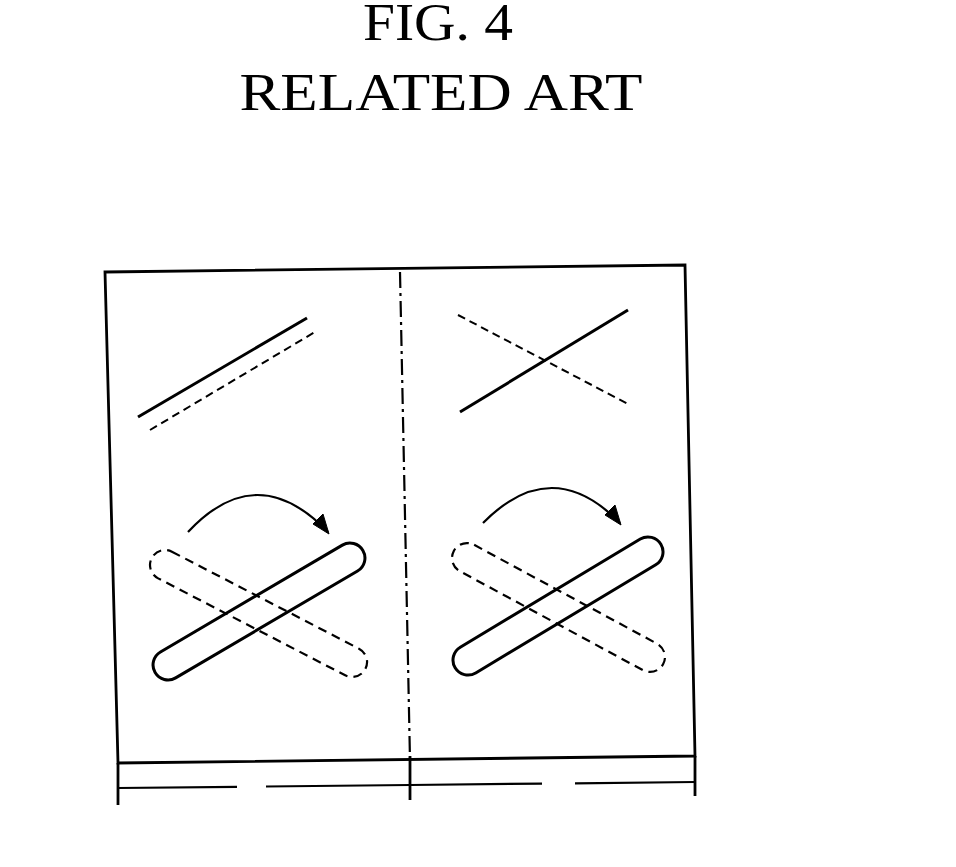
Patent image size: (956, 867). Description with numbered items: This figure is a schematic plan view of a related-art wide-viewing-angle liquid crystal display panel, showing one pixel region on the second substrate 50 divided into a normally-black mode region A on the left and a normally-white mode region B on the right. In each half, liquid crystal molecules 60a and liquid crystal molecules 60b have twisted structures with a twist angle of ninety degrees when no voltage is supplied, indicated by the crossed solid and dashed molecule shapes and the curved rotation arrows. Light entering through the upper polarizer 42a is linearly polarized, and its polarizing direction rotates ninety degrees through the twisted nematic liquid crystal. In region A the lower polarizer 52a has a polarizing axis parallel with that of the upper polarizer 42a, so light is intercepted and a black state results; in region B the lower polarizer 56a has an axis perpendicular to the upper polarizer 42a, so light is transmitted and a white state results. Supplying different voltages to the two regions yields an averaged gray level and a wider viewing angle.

The upper polarizer 42a is at (307, 318).
The second substrate 50 is at (687, 480).
The lower polarizer 52a is at (150, 430).
The lower polarizer 56a is at (630, 405).
The liquid crystal molecules 60a is at (168, 582).
The liquid crystal molecules 60b is at (660, 653).